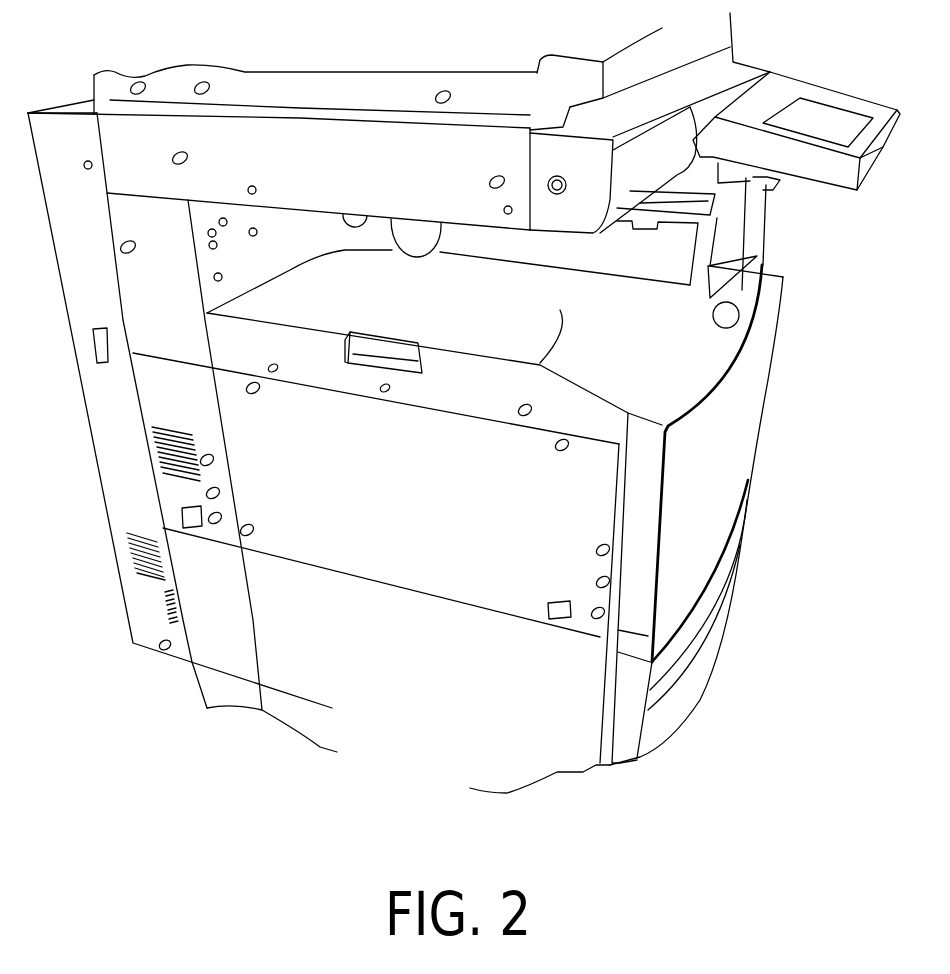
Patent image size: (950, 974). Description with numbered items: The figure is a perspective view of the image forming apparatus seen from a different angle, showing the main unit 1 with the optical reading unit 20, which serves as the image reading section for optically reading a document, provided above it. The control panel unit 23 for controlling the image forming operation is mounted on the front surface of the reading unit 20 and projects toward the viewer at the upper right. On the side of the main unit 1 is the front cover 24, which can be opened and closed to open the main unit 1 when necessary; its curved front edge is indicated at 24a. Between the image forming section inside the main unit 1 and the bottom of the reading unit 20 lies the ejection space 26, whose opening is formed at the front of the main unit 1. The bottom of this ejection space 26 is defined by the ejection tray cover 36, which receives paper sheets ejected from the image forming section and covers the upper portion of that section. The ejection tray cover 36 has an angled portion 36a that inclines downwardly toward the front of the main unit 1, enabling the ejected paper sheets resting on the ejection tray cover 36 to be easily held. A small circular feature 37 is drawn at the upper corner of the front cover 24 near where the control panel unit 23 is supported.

The main unit 1 is at (482, 557).
The optical reading unit 20 is at (330, 163).
The control panel unit 23 is at (837, 92).
The front cover 24 is at (757, 373).
The cover edge 24a is at (728, 330).
The ejection space 26 is at (492, 273).
The ejection tray cover 36 is at (597, 373).
The angled portion 36a is at (690, 328).
The hinge 37 is at (738, 312).